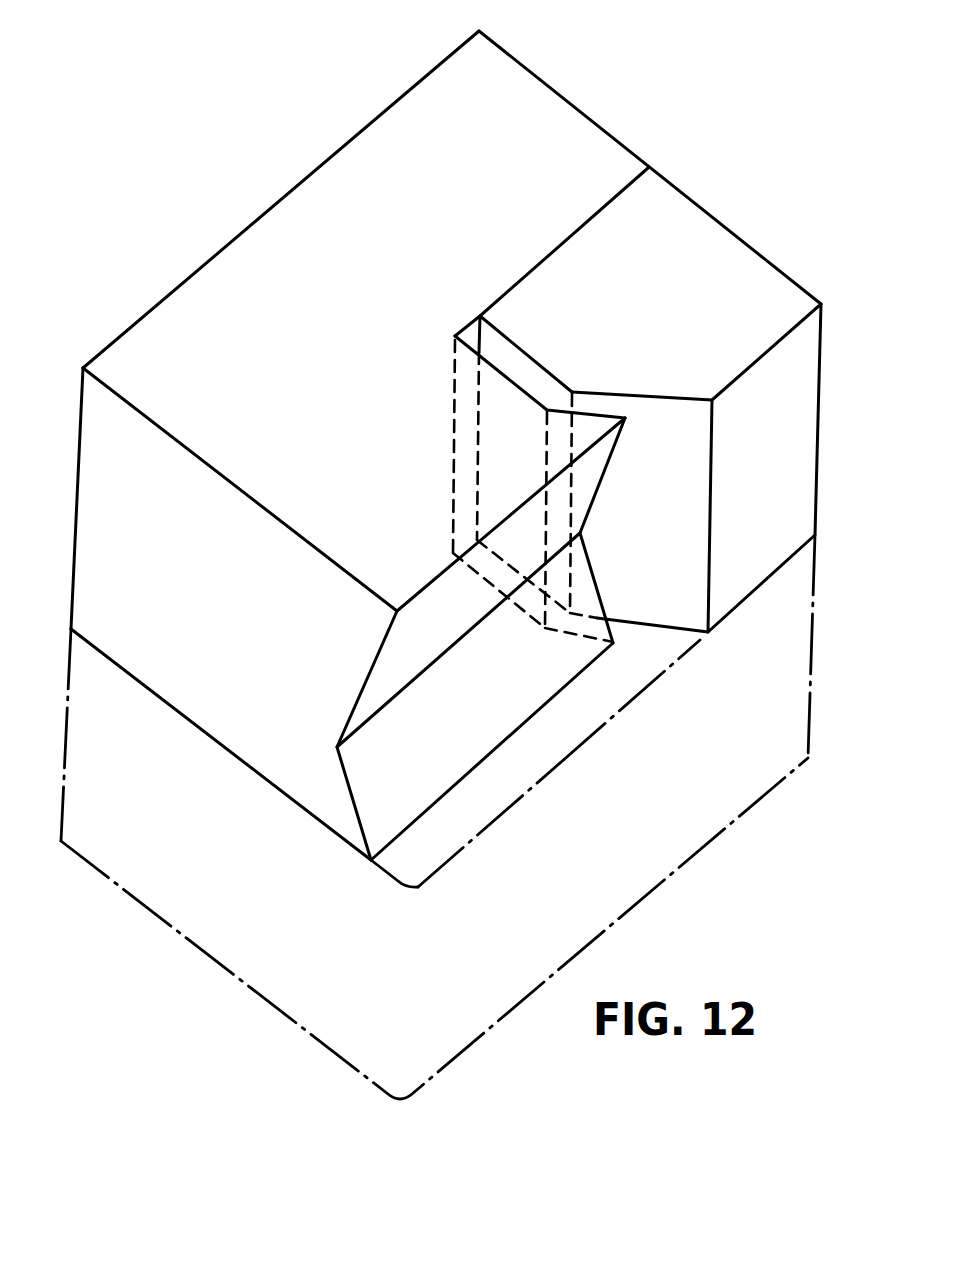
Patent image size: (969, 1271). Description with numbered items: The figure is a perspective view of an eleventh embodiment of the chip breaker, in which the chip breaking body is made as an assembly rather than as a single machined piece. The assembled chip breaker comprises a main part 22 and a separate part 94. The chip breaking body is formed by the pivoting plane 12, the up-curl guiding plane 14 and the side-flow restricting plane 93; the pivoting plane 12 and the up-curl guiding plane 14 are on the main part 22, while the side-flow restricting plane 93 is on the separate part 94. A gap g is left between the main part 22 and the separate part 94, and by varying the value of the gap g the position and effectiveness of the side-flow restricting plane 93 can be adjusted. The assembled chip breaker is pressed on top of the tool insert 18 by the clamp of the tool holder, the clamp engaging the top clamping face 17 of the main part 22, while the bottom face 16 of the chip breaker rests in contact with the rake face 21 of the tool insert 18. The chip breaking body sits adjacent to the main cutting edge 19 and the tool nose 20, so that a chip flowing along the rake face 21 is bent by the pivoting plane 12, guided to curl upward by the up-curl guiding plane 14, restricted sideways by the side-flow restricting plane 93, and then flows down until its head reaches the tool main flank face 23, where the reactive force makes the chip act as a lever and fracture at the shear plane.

The pivoting plane 12 is at (552, 674).
The up-curl guiding plane 14 is at (506, 582).
The bottom face 16 is at (212, 742).
The clamping face 17 is at (321, 213).
The tool insert 18 is at (90, 708).
The main cutting edge 19 is at (483, 838).
The tool nose 20 is at (420, 888).
The rake face 21 is at (545, 758).
The main part 22 is at (108, 550).
The tool main flank face 23 is at (618, 753).
The side-flow restricting plane 93 is at (680, 503).
The separate part 94 is at (700, 233).
The gap g is at (508, 378).